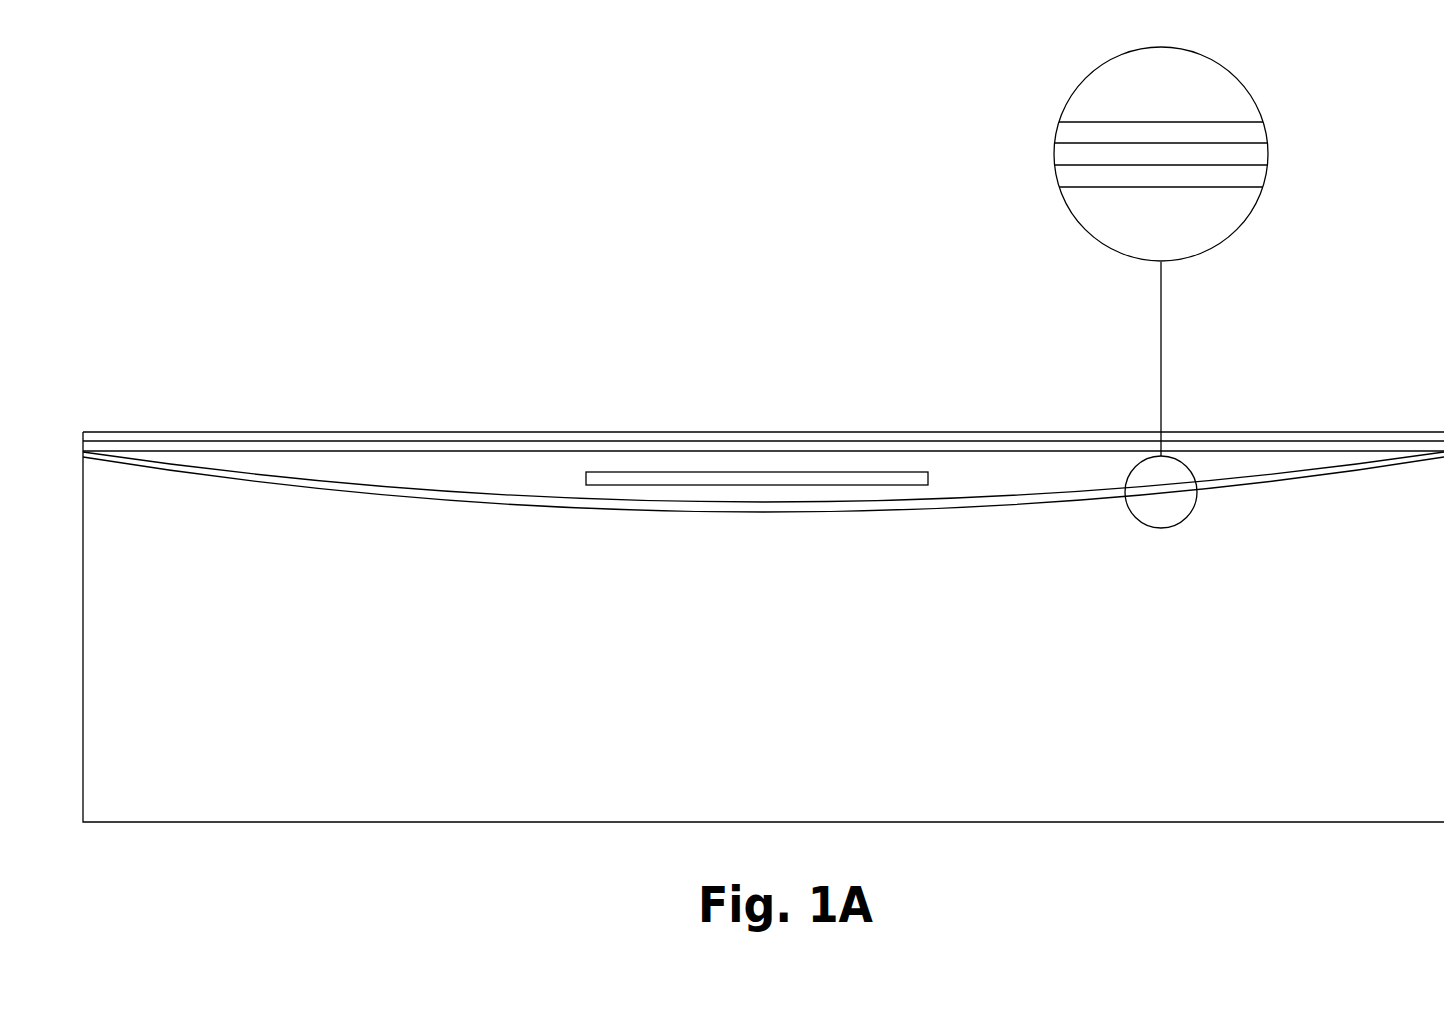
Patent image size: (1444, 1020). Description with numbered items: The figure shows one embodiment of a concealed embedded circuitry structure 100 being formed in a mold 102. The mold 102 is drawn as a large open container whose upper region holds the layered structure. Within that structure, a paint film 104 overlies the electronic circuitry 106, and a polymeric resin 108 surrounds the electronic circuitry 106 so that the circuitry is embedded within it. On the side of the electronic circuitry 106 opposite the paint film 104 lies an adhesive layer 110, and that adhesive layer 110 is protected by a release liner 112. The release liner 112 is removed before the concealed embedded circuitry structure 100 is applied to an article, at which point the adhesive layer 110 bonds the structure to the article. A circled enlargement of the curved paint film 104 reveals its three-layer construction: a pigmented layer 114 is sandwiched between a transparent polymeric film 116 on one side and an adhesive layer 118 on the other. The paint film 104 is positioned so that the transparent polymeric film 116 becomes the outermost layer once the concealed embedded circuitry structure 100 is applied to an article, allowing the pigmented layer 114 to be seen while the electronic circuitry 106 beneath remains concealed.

The concealed embedded circuitry structure 100 is at (794, 374).
The mold 102 is at (275, 800).
The paint film 104 is at (1235, 490).
The electronic circuitry 106 is at (670, 478).
The polymeric resin 108 is at (425, 462).
The adhesive layer 110 is at (349, 447).
The release liner 112 is at (273, 432).
The pigmented layer 114 is at (1058, 152).
The transparent polymeric film 116 is at (1165, 187).
The adhesive layer 118 is at (1165, 122).